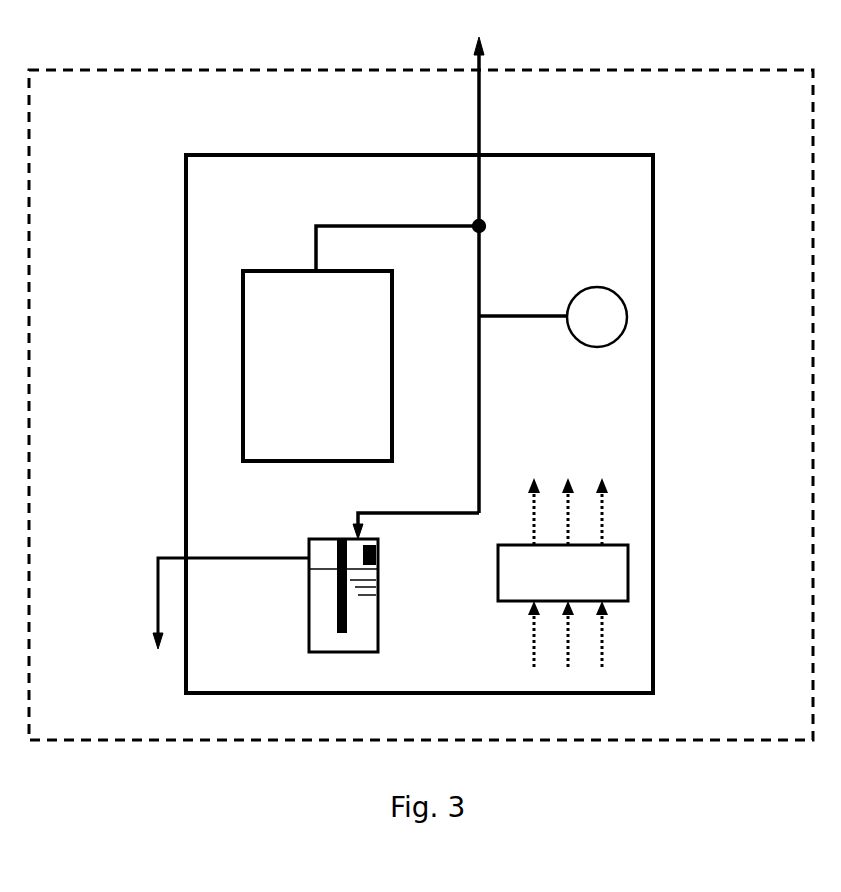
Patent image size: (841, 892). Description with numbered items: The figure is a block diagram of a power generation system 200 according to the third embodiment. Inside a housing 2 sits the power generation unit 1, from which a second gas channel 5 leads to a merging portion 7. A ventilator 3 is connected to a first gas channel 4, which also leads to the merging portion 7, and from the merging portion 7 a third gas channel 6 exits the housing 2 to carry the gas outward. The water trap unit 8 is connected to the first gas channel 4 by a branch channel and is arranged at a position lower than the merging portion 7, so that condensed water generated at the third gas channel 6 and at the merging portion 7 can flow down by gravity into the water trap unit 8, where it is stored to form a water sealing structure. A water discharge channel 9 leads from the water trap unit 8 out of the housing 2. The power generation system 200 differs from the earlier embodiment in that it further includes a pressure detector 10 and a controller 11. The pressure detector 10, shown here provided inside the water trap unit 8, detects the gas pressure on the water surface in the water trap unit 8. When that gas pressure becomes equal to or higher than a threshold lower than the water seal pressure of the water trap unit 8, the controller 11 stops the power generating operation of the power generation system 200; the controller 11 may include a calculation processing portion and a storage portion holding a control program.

The power generation system 200 is at (446, 38).
The power generation unit 1 is at (317, 366).
The housing 2 is at (222, 155).
The ventilator 3 is at (597, 317).
The first gas channel 4 is at (502, 314).
The second gas channel 5 is at (440, 226).
The third gas channel 6 is at (480, 145).
The merging portion 7 is at (488, 220).
The water trap unit 8 is at (378, 630).
The water discharge channel 9 is at (205, 555).
The pressure detector 10 is at (378, 548).
The controller 11 is at (628, 560).